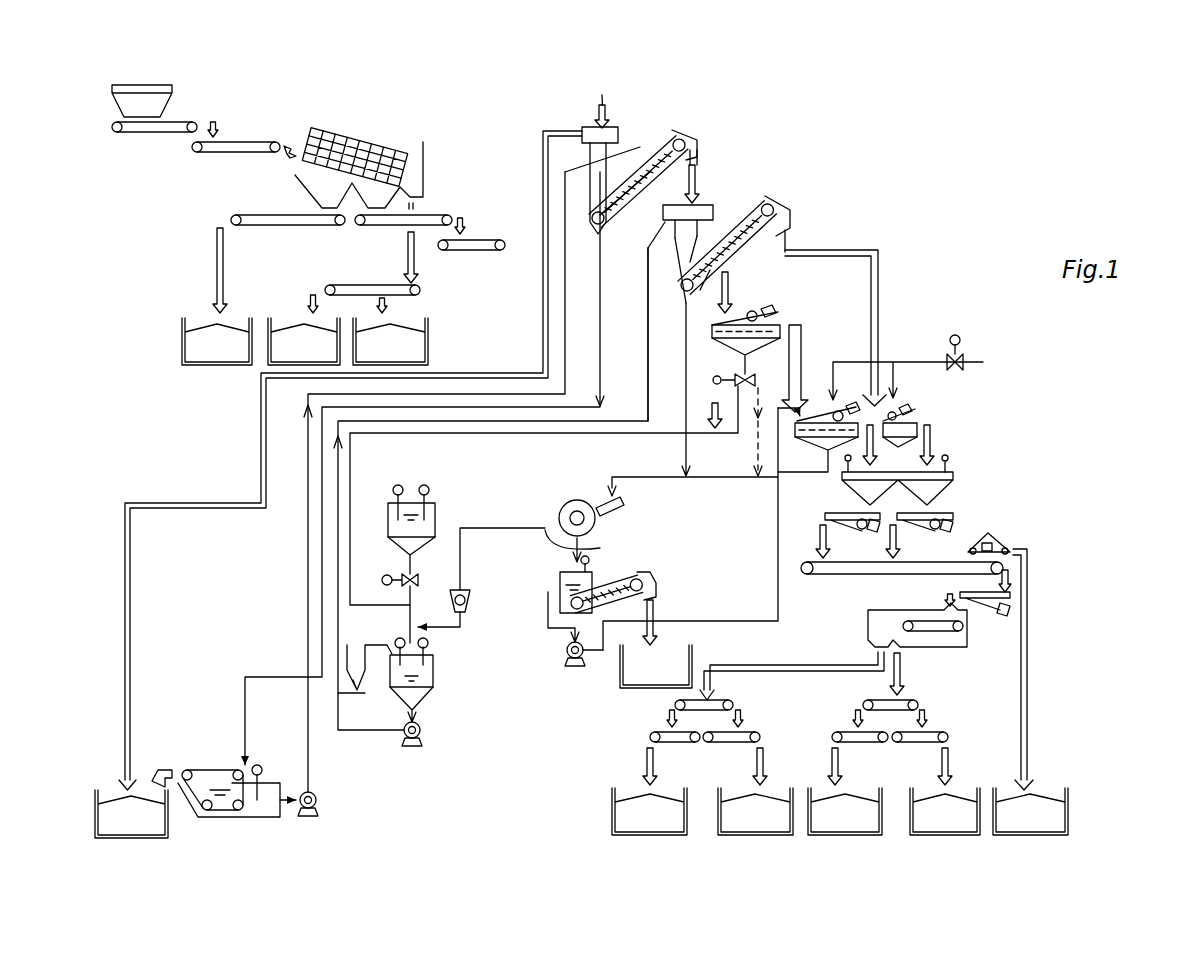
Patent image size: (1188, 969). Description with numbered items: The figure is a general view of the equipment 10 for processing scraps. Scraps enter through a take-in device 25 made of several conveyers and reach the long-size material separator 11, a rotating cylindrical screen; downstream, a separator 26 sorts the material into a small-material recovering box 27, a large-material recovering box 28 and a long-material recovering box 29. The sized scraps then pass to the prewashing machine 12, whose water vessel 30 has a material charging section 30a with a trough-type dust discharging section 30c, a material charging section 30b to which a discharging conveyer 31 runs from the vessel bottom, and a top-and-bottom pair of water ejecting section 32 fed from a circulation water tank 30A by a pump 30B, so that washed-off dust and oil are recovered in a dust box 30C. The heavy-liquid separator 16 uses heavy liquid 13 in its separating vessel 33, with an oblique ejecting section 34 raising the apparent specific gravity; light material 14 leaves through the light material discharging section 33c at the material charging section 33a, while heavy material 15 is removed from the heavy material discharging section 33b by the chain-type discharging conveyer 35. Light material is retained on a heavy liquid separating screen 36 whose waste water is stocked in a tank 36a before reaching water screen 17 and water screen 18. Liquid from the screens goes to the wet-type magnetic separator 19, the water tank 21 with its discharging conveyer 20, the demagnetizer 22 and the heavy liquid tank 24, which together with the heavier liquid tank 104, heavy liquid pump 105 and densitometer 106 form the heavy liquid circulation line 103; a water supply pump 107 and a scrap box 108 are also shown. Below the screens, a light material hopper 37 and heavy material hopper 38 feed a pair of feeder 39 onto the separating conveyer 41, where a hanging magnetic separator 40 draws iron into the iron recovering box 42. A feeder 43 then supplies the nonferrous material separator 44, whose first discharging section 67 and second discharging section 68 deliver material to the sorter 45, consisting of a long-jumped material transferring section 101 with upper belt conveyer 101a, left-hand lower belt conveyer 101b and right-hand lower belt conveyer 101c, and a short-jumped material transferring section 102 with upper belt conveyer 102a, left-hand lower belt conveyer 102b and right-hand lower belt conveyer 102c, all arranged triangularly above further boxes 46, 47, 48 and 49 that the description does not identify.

The equipment for processing scraps 10 is at (894, 136).
The long-size material separator 11 is at (335, 135).
The prewashing machine 12 is at (654, 132).
The heavy liquid 13 is at (648, 286).
The light material 14 is at (758, 196).
The heavy material 15 is at (850, 255).
The heavy-liquid separator 16 is at (784, 190).
The water screen 17 is at (842, 408).
The water screen 18 is at (916, 420).
The wet-type magnetic separator 19 is at (568, 500).
The discharging conveyer 20 is at (612, 580).
The water tank 21 is at (560, 580).
The demagnetizer 22 is at (471, 600).
The heavy liquid tank 24 is at (395, 702).
The take-in device 25 is at (205, 108).
The separator 26 is at (195, 196).
The small-material recovering box 27 is at (218, 364).
The large-material recovering box 28 is at (264, 326).
The long-material recovering box 29 is at (428, 342).
The water vessel 30 is at (620, 152).
The material charging section 30a is at (600, 120).
The material charging section 30b is at (697, 144).
The dust discharging section 30c is at (606, 122).
The circulation water tank 30A is at (260, 818).
The pump 30B is at (315, 808).
The dust box 30C is at (126, 838).
The discharging conveyer 31 is at (700, 152).
The water ejecting section 32 is at (600, 192).
The separating vessel 33 is at (770, 201).
The material charging section 33a is at (673, 218).
The heavy material discharging section 33b is at (782, 230).
The light material discharging section 33c is at (713, 205).
The ejecting section 34 is at (700, 240).
The discharging conveyer 35 is at (790, 216).
The heavy liquid separating screen 36 is at (783, 318).
The tank 36a is at (755, 400).
The light material hopper 37 is at (850, 496).
The heavy material hopper 38 is at (955, 477).
The feeder 39 is at (962, 506).
The magnetic separator 40 is at (1000, 543).
The separating conveyer 41 is at (840, 576).
The iron recovering box 42 is at (1022, 836).
The feeder 43 is at (1002, 621).
The nonferrous material separator 44 is at (970, 646).
The sorter 45 is at (604, 698).
The Al container 46 is at (650, 836).
The dust container 47 is at (845, 836).
The Cu,Zn container 48 is at (748, 836).
The SUS container 49 is at (936, 836).
The first discharging section 67 is at (905, 648).
The second discharging section 68 is at (865, 645).
The long-jumped material transferring section 101 is at (530, 730).
The upper belt conveyer 101a is at (680, 705).
The left-hand lower belt conveyer 101b is at (655, 740).
The right-hand lower belt conveyer 101c is at (712, 745).
The short-jumped material transferring section 102 is at (1130, 668).
The upper belt conveyer 102a is at (920, 700).
The left-hand lower belt conveyer 102b is at (920, 723).
The right-hand lower belt conveyer 102c is at (950, 743).
The heavy liquid circulation line 103 is at (450, 766).
The heavier liquid tank 104 is at (440, 514).
The heavy liquid pump 105 is at (428, 738).
The densitometer 106 is at (347, 660).
The water supply pump 107 is at (568, 650).
The scrap box 108 is at (695, 650).